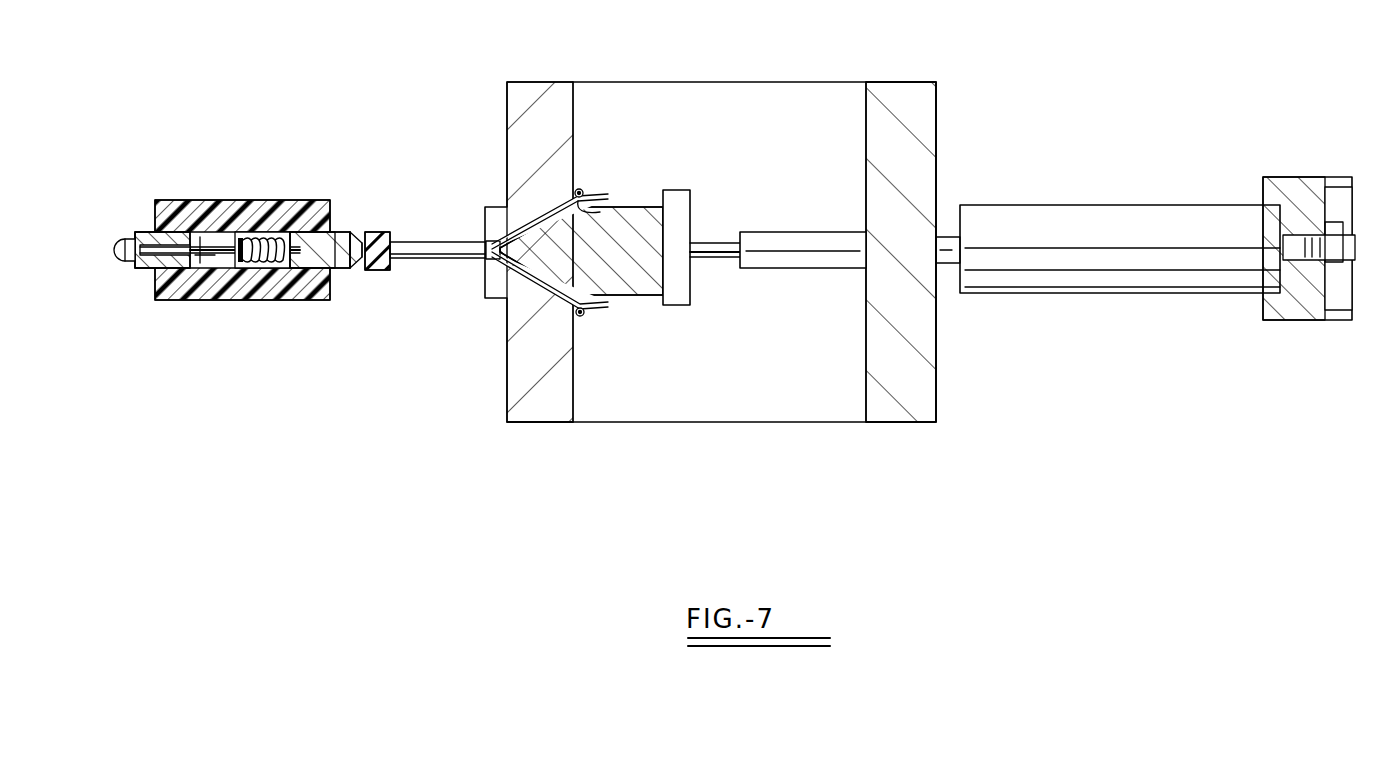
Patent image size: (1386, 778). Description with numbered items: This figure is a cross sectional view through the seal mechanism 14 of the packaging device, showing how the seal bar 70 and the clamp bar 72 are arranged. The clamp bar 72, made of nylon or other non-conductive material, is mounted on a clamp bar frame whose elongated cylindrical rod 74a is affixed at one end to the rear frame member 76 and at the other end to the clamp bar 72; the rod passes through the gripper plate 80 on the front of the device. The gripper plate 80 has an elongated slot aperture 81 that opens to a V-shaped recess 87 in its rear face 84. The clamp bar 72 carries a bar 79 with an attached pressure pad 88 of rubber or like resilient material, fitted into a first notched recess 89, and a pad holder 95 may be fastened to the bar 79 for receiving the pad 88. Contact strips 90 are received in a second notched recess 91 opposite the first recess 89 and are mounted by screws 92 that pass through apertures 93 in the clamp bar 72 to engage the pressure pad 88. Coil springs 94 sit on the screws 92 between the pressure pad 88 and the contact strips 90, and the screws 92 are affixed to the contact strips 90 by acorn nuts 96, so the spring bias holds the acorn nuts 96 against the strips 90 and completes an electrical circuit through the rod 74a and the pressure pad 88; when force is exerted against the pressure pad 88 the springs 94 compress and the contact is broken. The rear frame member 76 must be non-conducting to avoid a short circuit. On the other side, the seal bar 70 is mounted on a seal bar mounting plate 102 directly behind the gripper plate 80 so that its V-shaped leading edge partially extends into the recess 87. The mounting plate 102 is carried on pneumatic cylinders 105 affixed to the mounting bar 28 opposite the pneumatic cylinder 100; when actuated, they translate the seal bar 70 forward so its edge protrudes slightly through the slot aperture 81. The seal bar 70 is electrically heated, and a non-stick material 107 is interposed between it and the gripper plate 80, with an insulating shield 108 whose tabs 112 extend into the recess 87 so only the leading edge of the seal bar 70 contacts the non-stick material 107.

The sealing mechanism 14 is at (395, 462).
The mounting bar 28 is at (900, 82).
The seal bar 70 is at (635, 207).
The clamp bar 72 is at (235, 205).
The rod 74a is at (430, 240).
The rear frame member 76 is at (1322, 177).
The bar 79 is at (338, 268).
The gripper plate 80 is at (550, 82).
The slot aperture 81 is at (490, 262).
The rear face 84 is at (575, 388).
The V-shaped recess 87 is at (577, 188).
The pressure pad 88 is at (380, 272).
The first notched recess 89 is at (345, 238).
The contact strips 90 is at (142, 232).
The second notched recess 91 is at (158, 268).
The screws 92 is at (203, 245).
The apertures 93 is at (205, 265).
The coil springs 94 is at (272, 265).
The pad holder 95 is at (355, 270).
The acorn nuts 96 is at (113, 250).
The pneumatic cylinder 100 is at (1065, 205).
The seal bar mounting plate 102 is at (680, 190).
The pneumatic cylinders 105 is at (820, 268).
The non-stick material 107 is at (585, 314).
The insulating shield 108 is at (622, 306).
The tabs 112 is at (612, 200).